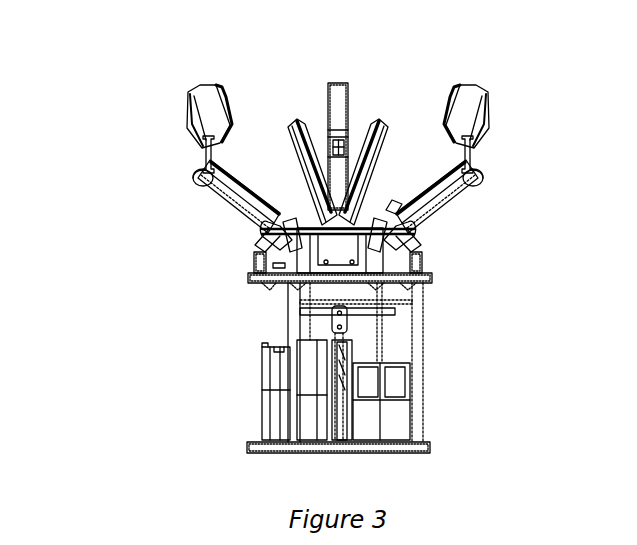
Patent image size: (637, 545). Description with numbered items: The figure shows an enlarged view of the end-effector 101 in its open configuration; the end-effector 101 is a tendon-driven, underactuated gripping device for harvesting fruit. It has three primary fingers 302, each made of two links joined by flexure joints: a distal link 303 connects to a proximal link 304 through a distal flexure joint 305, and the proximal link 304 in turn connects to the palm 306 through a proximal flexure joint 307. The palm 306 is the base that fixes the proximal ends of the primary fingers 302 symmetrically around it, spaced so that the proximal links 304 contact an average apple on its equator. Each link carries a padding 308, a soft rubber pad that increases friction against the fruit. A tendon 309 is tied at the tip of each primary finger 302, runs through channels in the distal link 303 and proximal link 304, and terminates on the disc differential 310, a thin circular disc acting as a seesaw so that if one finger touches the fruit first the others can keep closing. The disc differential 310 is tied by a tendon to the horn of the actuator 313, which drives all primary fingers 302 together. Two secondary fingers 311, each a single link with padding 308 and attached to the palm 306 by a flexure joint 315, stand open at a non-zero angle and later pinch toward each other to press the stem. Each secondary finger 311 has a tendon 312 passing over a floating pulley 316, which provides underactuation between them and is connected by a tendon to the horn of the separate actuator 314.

The end-effector 101 is at (71, 295).
The primary finger 302 is at (184, 186).
The distal link 303 is at (188, 110).
The proximal link 304 is at (238, 205).
The distal flexure joint 305 is at (195, 158).
The palm 306 is at (392, 203).
The proximal flexure joint 307 is at (260, 268).
The padding 308 is at (244, 215).
The tendon 309 is at (287, 225).
The disc differential 310 is at (375, 318).
The secondary finger 311 is at (288, 94).
The tendon 312 is at (323, 243).
The actuator 313 is at (258, 378).
The actuator 314 is at (410, 400).
The flexure joint 315 is at (397, 292).
The floating pulley 316 is at (332, 327).